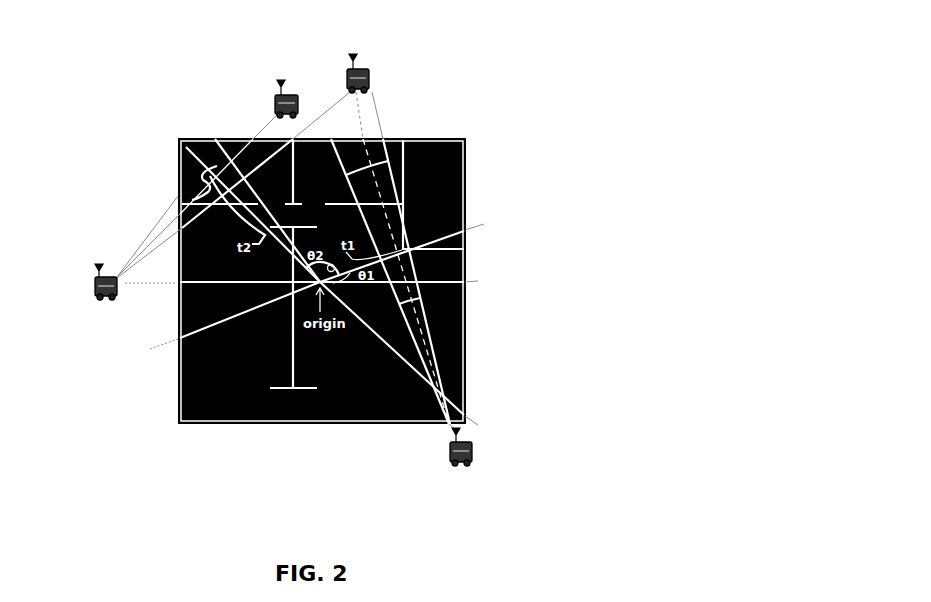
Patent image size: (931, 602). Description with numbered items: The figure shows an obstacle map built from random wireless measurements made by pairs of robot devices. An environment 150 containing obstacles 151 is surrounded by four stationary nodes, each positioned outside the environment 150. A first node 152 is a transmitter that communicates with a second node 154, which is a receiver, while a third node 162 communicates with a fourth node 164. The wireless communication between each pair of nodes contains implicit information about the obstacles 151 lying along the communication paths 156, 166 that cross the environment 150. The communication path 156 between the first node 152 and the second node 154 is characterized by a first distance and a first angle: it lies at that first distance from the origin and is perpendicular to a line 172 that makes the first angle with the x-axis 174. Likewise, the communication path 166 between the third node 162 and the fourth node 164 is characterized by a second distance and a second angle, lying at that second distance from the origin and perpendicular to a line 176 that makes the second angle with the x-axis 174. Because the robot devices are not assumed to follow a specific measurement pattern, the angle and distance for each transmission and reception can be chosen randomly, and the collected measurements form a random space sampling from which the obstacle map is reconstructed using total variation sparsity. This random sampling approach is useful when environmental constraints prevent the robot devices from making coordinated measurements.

The environment 150 is at (180, 402).
The obstacles 151 is at (293, 425).
The first node 152 is at (472, 452).
The second node 154 is at (368, 80).
The communication path 156 is at (362, 127).
The third node 162 is at (97, 289).
The fourth node 164 is at (285, 97).
The communication path 166 is at (187, 190).
The line 172 is at (485, 224).
The x-axis 174 is at (478, 280).
The line 176 is at (478, 425).